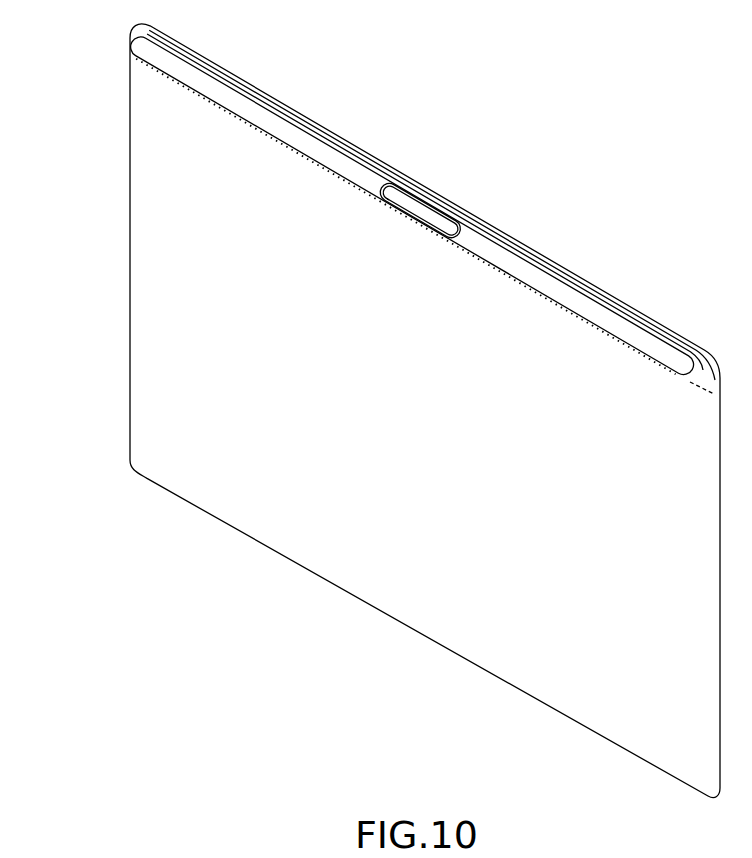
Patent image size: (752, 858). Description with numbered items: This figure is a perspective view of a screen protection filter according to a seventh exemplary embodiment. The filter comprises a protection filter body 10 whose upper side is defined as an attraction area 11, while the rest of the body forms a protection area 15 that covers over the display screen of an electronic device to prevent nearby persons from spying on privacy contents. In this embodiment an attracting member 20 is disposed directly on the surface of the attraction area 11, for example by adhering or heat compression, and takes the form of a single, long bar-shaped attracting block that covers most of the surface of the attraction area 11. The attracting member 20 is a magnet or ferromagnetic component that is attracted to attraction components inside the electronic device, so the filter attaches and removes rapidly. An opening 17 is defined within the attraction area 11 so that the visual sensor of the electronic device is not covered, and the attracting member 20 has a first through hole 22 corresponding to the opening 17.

The protection filter body 10 is at (63, 29).
The attraction area 11 is at (130, 31).
The protection area 15 is at (147, 104).
The attracting member 20 is at (280, 127).
The first through hole 22 is at (388, 197).
The opening 17 is at (430, 190).